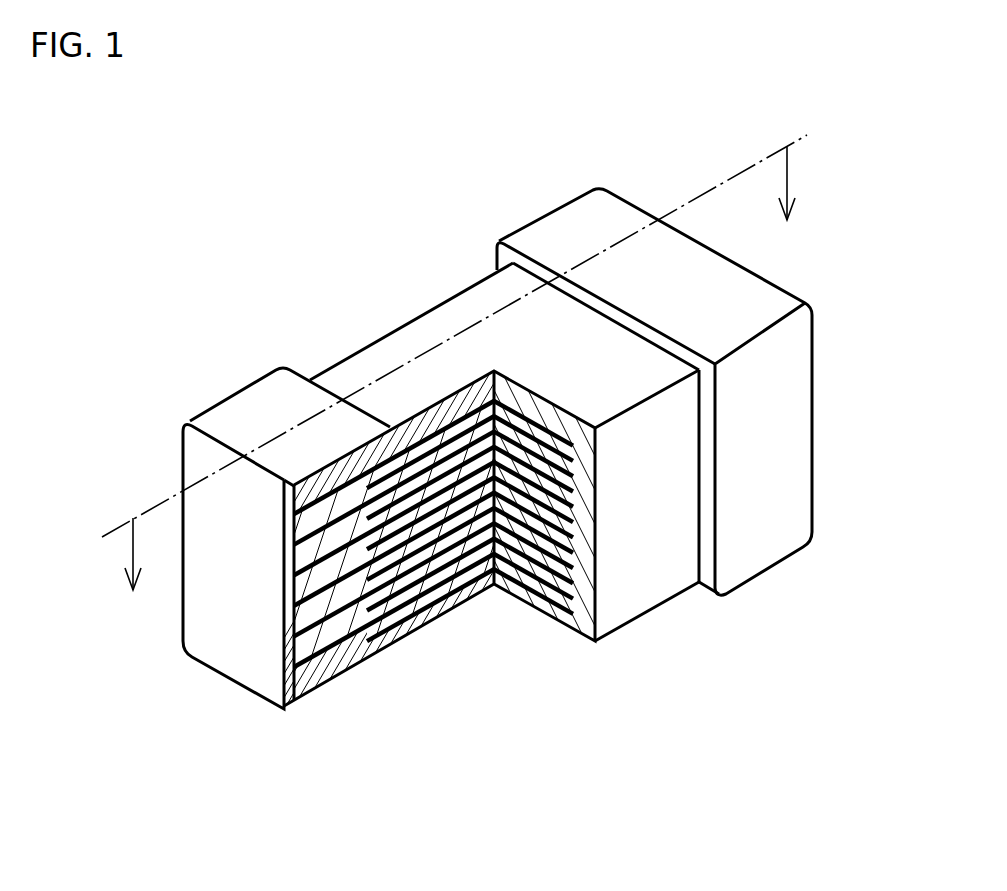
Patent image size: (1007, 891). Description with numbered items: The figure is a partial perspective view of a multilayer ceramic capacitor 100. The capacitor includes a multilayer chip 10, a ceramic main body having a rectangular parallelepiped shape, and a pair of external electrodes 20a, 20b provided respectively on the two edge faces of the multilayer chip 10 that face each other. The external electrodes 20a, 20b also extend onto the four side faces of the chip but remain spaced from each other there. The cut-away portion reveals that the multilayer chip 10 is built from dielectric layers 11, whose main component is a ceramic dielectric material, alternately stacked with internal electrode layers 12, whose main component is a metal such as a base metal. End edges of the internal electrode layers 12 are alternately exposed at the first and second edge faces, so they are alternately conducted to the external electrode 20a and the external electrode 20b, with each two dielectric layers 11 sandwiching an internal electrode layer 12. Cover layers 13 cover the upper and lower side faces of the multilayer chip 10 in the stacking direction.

The multilayer ceramic capacitor 100 is at (918, 120).
The multilayer chip 10 is at (349, 354).
The dielectric layer 11 is at (412, 593).
The internal electrode layer 12 is at (468, 595).
The cover layer 13 is at (462, 308).
The external electrode 20a is at (246, 390).
The external electrode 20b is at (553, 232).